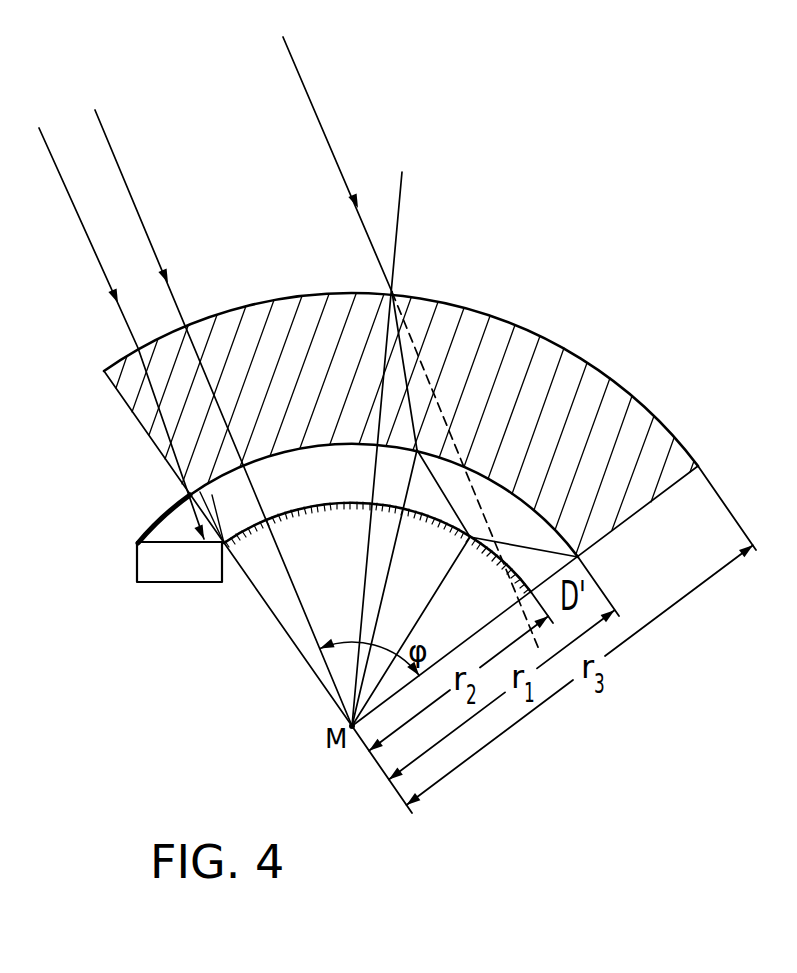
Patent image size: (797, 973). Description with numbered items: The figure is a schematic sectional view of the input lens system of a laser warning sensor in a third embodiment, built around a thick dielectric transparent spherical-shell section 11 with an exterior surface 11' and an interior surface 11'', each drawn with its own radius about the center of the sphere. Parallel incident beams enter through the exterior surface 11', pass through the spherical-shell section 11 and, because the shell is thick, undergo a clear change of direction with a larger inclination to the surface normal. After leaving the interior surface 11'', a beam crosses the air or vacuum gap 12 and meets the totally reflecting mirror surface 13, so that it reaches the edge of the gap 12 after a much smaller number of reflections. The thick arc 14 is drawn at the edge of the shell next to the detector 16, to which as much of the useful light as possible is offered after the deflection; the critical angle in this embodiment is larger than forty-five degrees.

The spherical-shell section 11 is at (401, 459).
The exterior surface 11' is at (401, 364).
The interior surface 11'' is at (449, 452).
The air or vacuum gap 12 is at (316, 468).
The totally reflecting mirror surface 13 is at (315, 512).
The thick reference arc segment 14 is at (161, 513).
The detector 16 is at (158, 570).